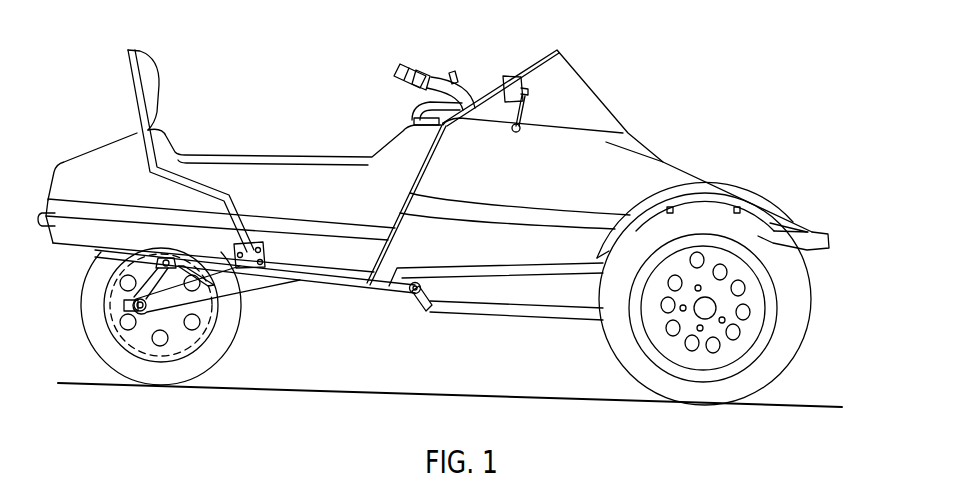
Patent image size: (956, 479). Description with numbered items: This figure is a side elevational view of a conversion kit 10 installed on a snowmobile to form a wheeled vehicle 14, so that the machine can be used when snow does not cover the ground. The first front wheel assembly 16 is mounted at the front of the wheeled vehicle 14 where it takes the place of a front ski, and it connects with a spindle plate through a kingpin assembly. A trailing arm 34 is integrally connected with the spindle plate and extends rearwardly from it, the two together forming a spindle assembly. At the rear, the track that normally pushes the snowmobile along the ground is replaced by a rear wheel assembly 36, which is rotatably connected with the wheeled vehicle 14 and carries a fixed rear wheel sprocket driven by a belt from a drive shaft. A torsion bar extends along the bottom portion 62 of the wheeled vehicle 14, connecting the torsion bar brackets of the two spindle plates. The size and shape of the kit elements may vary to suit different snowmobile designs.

The conversion kit 10 is at (437, 206).
The wheeled vehicle 14 is at (678, 108).
The first front wheel assembly 16 is at (753, 335).
The trailing arm 34 is at (517, 315).
The rear wheel assembly 36 is at (264, 324).
The bottom portion 62 is at (366, 298).